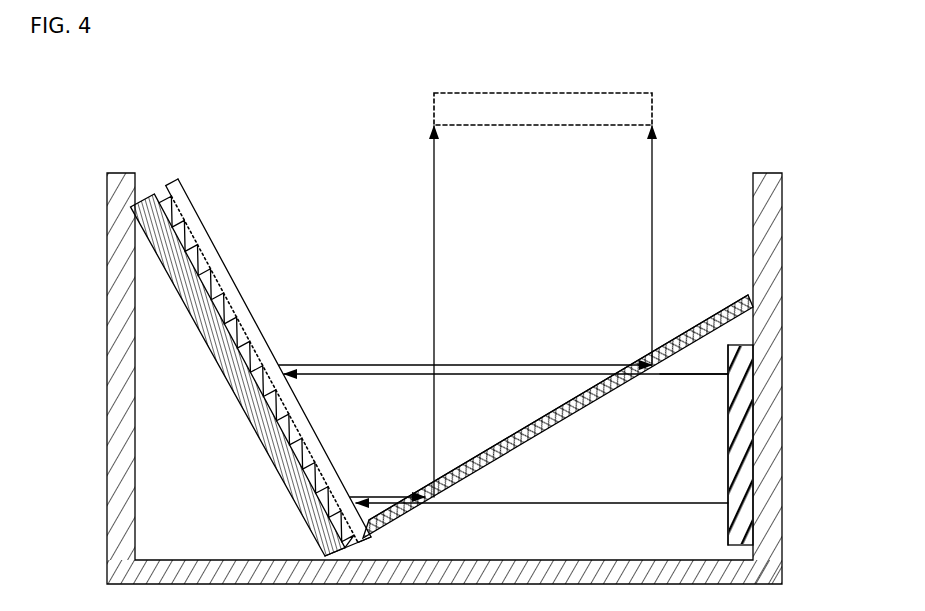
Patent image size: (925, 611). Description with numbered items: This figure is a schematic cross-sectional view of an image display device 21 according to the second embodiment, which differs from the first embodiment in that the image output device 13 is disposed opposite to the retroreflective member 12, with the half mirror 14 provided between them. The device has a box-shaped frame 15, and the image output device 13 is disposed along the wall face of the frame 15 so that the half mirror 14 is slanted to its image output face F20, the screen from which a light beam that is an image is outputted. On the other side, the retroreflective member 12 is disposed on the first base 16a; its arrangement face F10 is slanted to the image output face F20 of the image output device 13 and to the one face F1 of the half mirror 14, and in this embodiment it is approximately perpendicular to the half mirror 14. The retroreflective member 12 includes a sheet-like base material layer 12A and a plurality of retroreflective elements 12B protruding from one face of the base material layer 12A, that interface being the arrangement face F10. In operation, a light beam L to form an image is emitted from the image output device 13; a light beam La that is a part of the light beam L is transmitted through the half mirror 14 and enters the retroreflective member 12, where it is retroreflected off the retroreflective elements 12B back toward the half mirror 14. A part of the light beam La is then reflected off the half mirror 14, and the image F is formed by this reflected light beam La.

The image display device 21 is at (232, 106).
The frame 15 is at (107, 455).
The retroreflective member 12 is at (273, 186).
The base material layer 12A is at (193, 220).
The retroreflective elements 12B is at (200, 248).
The arrangement face F10 is at (213, 270).
The first base 16a is at (268, 445).
The half mirror 14 is at (663, 345).
The one face of the half mirror F1 is at (705, 345).
The image output device 13 is at (733, 466).
The image output face F20 is at (727, 456).
The image F is at (532, 93).
The light beam La is at (437, 240).
The light beam L is at (655, 376).